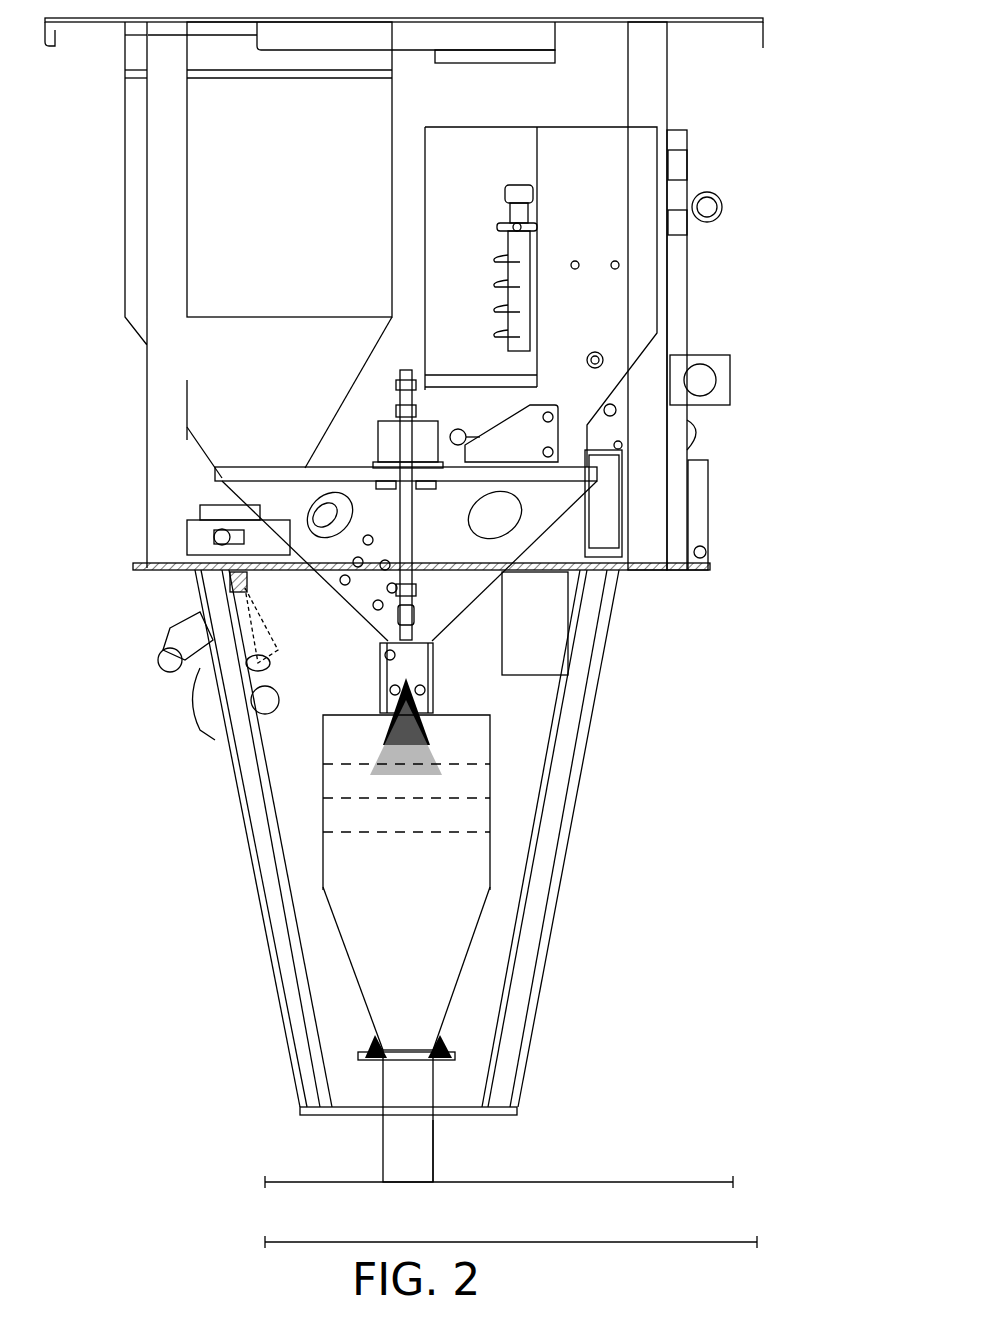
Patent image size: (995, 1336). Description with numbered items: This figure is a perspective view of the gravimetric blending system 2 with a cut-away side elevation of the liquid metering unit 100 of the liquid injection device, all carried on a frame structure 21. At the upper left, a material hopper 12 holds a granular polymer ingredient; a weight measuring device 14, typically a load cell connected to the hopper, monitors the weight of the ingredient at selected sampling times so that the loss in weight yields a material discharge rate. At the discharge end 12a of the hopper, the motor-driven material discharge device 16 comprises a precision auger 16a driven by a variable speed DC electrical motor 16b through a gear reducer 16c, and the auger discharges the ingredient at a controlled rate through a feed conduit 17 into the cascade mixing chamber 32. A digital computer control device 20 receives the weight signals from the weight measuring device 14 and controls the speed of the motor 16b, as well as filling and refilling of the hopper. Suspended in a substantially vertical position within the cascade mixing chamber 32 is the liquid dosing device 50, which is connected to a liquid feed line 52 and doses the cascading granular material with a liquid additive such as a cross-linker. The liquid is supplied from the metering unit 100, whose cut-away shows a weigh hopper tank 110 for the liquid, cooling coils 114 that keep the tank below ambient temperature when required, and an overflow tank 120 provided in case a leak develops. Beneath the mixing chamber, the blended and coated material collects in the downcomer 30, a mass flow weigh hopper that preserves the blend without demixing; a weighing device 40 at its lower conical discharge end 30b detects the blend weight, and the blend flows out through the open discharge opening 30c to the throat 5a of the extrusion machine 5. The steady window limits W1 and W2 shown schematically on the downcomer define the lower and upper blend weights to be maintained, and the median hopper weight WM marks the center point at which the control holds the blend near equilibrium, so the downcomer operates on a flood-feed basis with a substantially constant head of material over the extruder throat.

The system 2 is at (752, 132).
The extrusion machine 5 is at (662, 1180).
The extruder throat 5a is at (436, 1140).
The material hopper 12 is at (250, 122).
The discharge end 12a is at (240, 413).
The weight measuring device 14 is at (190, 540).
The material discharge device 16 is at (128, 687).
The precision auger 16a is at (330, 505).
The variable speed DC electrical motor 16b is at (140, 684).
The gear reducer 16c is at (182, 617).
The feed conduit 17 is at (250, 582).
The digital computer control device 20 is at (275, 712).
The frame structure 21 is at (155, 472).
The downcomer 30 is at (381, 766).
The lower conical discharge end 30b is at (460, 960).
The discharge opening 30c is at (382, 1112).
The cascade mixing chamber 32 is at (530, 513).
The weighing device 40 is at (455, 1045).
The liquid dosing device 50 is at (383, 400).
The liquid feed line 52 is at (442, 435).
The metering unit 100 is at (617, 219).
The weigh hopper tank 110 is at (497, 240).
The cooling coils 114 is at (490, 282).
The overflow tank 120 is at (555, 648).
The steady window limit W1 is at (358, 838).
The steady window limit W2 is at (322, 762).
The median hopper weight WM is at (345, 798).